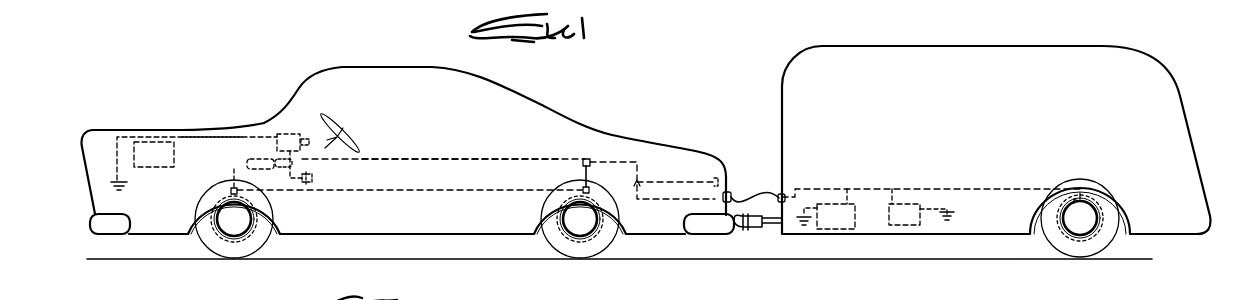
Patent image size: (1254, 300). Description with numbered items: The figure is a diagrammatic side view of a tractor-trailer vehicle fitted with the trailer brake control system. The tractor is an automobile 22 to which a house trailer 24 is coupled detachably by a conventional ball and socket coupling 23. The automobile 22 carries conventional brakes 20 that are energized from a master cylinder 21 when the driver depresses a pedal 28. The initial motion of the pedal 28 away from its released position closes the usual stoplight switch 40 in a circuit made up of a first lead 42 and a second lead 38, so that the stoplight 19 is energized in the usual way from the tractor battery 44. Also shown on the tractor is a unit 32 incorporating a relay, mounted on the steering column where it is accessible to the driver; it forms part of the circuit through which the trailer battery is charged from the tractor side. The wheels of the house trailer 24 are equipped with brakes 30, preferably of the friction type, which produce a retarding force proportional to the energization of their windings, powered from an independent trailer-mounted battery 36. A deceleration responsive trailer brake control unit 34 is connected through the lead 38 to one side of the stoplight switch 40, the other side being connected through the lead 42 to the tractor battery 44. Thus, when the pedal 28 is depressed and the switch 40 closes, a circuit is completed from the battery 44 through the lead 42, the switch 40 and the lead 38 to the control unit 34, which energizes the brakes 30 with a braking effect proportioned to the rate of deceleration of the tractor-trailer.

The stoplight 19 is at (713, 175).
The brakes 20 is at (192, 222).
The master cylinder 21 is at (238, 160).
The automobile 22 is at (391, 59).
The ball and socket coupling 23 is at (745, 212).
The house trailer 24 is at (975, 38).
The pedal 28 is at (311, 176).
The brakes 30 is at (1100, 206).
The unit 32 is at (286, 132).
The trailer brake control unit 34 is at (908, 224).
The battery 36 is at (833, 202).
The lead 38 is at (393, 157).
The stoplight switch 40 is at (586, 157).
The lead 42 is at (204, 135).
The battery 44 is at (154, 140).